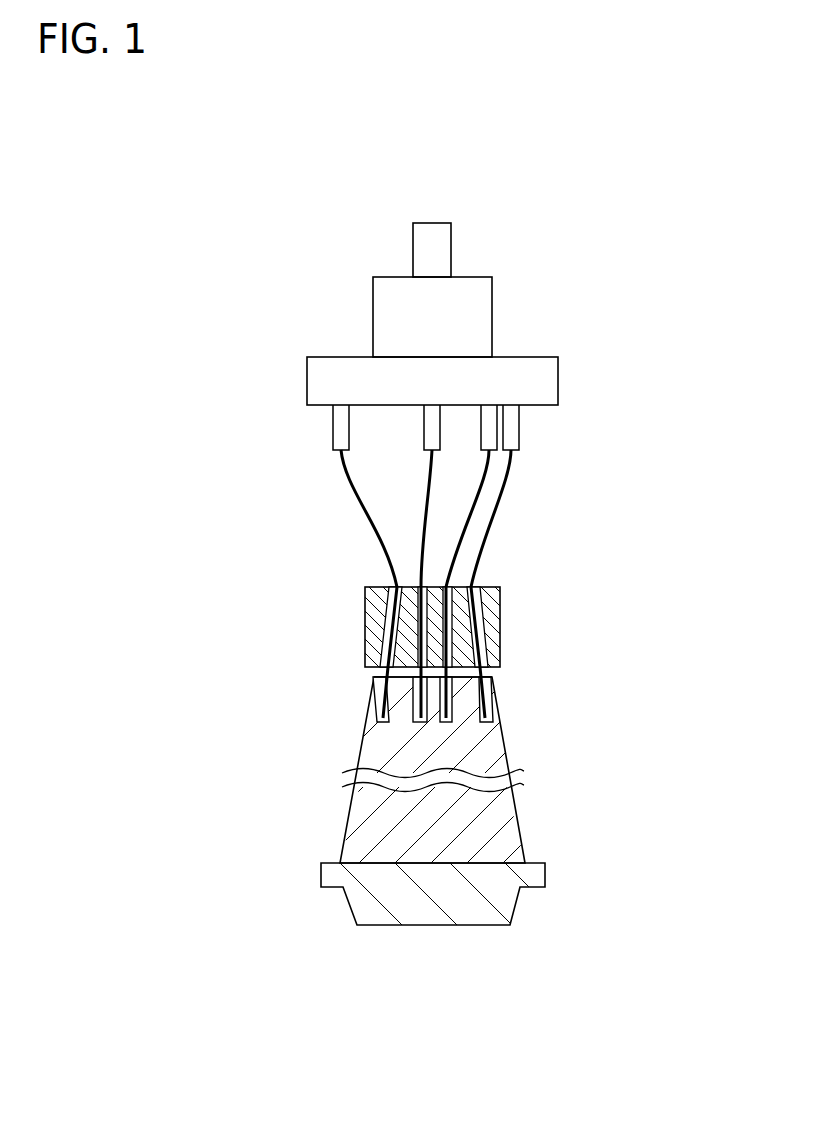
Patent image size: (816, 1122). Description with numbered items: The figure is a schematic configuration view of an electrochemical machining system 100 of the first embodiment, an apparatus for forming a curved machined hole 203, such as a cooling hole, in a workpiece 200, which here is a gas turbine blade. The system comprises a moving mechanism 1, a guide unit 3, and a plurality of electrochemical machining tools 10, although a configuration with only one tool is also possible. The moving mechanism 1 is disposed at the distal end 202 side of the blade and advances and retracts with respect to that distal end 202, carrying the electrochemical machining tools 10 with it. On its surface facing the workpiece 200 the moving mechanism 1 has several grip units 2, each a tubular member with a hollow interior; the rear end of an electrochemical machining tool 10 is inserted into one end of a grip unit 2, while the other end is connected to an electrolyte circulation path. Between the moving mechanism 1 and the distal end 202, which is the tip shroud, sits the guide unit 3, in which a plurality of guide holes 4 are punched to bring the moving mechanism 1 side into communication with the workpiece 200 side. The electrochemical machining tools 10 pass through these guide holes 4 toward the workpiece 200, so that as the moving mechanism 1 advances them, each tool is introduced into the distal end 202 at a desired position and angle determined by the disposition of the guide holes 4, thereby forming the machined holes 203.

The electrochemical machining system 100 is at (475, 419).
The moving mechanism 1 is at (495, 314).
The grip unit 2 is at (339, 428).
The electrochemical machining tool 10 is at (422, 537).
The guide unit 3 is at (432, 613).
The guide hole 4 is at (417, 614).
The workpiece 200 is at (463, 756).
The distal end 202 is at (376, 677).
The machined hole 203 is at (427, 718).